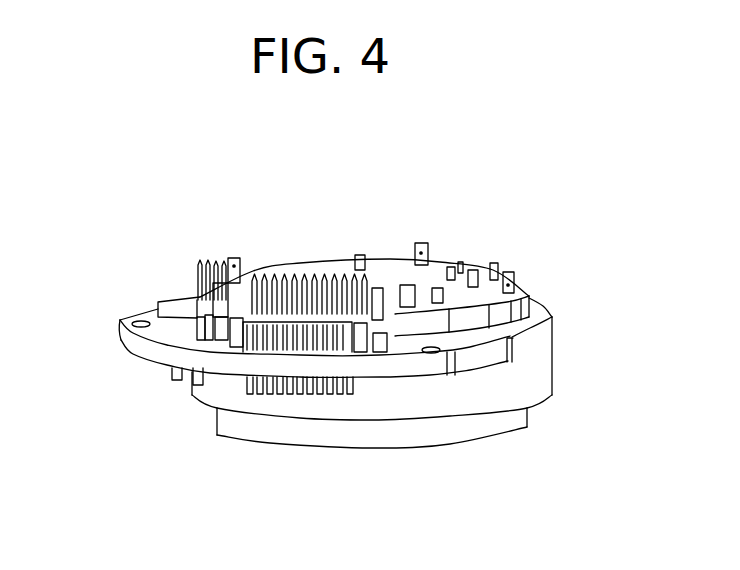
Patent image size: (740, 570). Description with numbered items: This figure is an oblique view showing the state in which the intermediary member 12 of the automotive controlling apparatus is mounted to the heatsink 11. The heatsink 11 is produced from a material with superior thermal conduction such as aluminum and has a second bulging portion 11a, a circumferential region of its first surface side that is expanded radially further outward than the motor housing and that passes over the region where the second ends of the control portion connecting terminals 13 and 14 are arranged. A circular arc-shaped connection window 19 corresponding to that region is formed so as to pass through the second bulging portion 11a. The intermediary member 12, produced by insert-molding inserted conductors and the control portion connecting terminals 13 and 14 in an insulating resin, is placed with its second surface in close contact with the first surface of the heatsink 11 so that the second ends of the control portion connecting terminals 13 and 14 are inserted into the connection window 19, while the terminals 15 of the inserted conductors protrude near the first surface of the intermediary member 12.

The heatsink 11 is at (553, 336).
The second bulging portion 11a is at (374, 368).
The intermediary member 12 is at (514, 273).
The control portion connecting terminals 13 is at (268, 386).
The control portion connecting terminals 14 is at (172, 376).
The terminals of the inserted conductors 15 is at (359, 255).
The connection window 19 is at (120, 339).